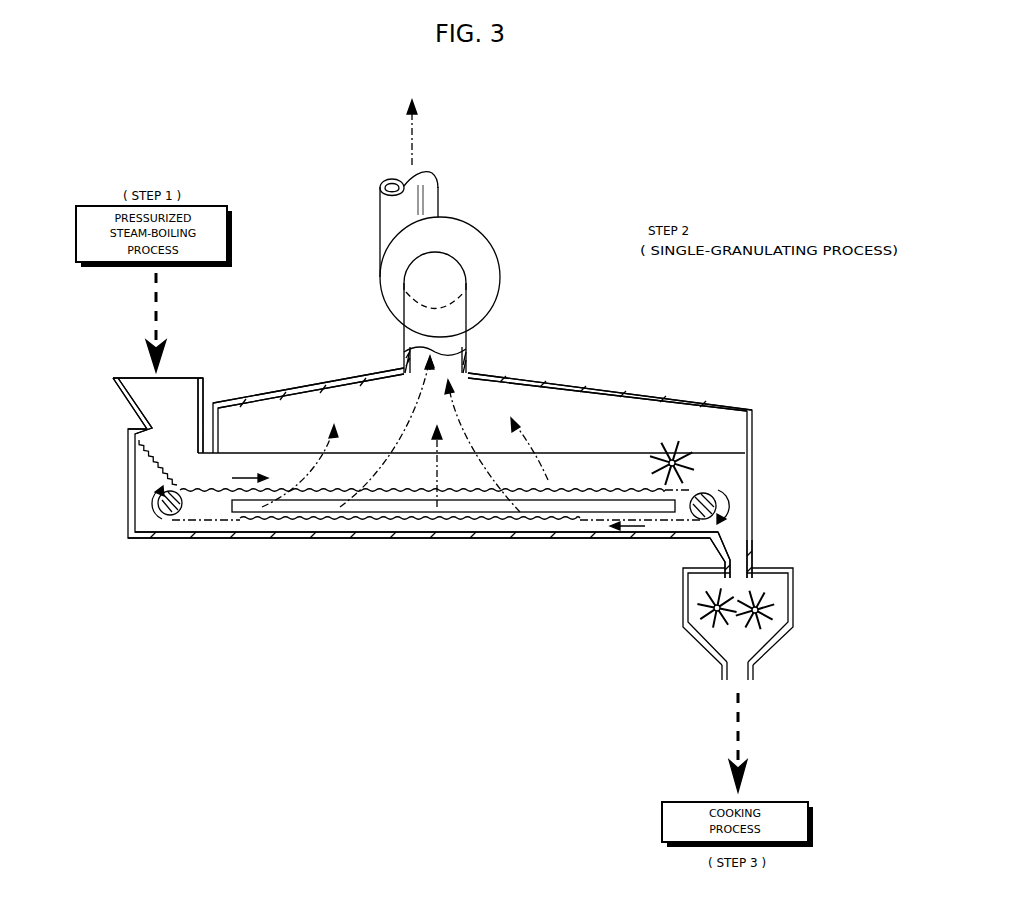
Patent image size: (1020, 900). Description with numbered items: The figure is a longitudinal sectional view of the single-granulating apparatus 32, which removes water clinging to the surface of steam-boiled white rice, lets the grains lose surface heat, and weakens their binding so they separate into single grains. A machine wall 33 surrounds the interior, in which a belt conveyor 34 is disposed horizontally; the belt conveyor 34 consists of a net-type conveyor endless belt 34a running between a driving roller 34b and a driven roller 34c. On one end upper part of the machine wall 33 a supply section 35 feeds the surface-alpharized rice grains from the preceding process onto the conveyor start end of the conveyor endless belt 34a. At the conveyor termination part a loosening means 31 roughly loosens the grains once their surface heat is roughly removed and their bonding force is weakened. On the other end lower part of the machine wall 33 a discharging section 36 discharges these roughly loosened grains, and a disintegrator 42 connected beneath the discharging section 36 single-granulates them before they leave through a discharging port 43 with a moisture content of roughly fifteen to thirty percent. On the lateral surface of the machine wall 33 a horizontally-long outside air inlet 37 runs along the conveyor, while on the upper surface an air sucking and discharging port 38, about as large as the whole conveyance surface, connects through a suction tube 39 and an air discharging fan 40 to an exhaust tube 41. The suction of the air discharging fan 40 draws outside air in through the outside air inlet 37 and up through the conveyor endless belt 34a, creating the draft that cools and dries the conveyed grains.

The loosening means 31 is at (687, 447).
The single-granulating apparatus 32 is at (617, 220).
The machine wall 33 is at (487, 538).
The belt conveyor 34 is at (566, 476).
The conveyor endless belt 34a is at (575, 490).
The driving roller 34b is at (168, 513).
The driven roller 34c is at (730, 498).
The supply section 35 is at (150, 387).
The discharging section 36 is at (742, 555).
The outside air inlet 37 is at (402, 512).
The air sucking and discharging port 38 is at (290, 455).
The suction tube 39 is at (532, 382).
The air discharging fan 40 is at (392, 272).
The exhaust tube 41 is at (385, 217).
The disintegrator 42 is at (692, 633).
The discharging port 43 is at (737, 673).